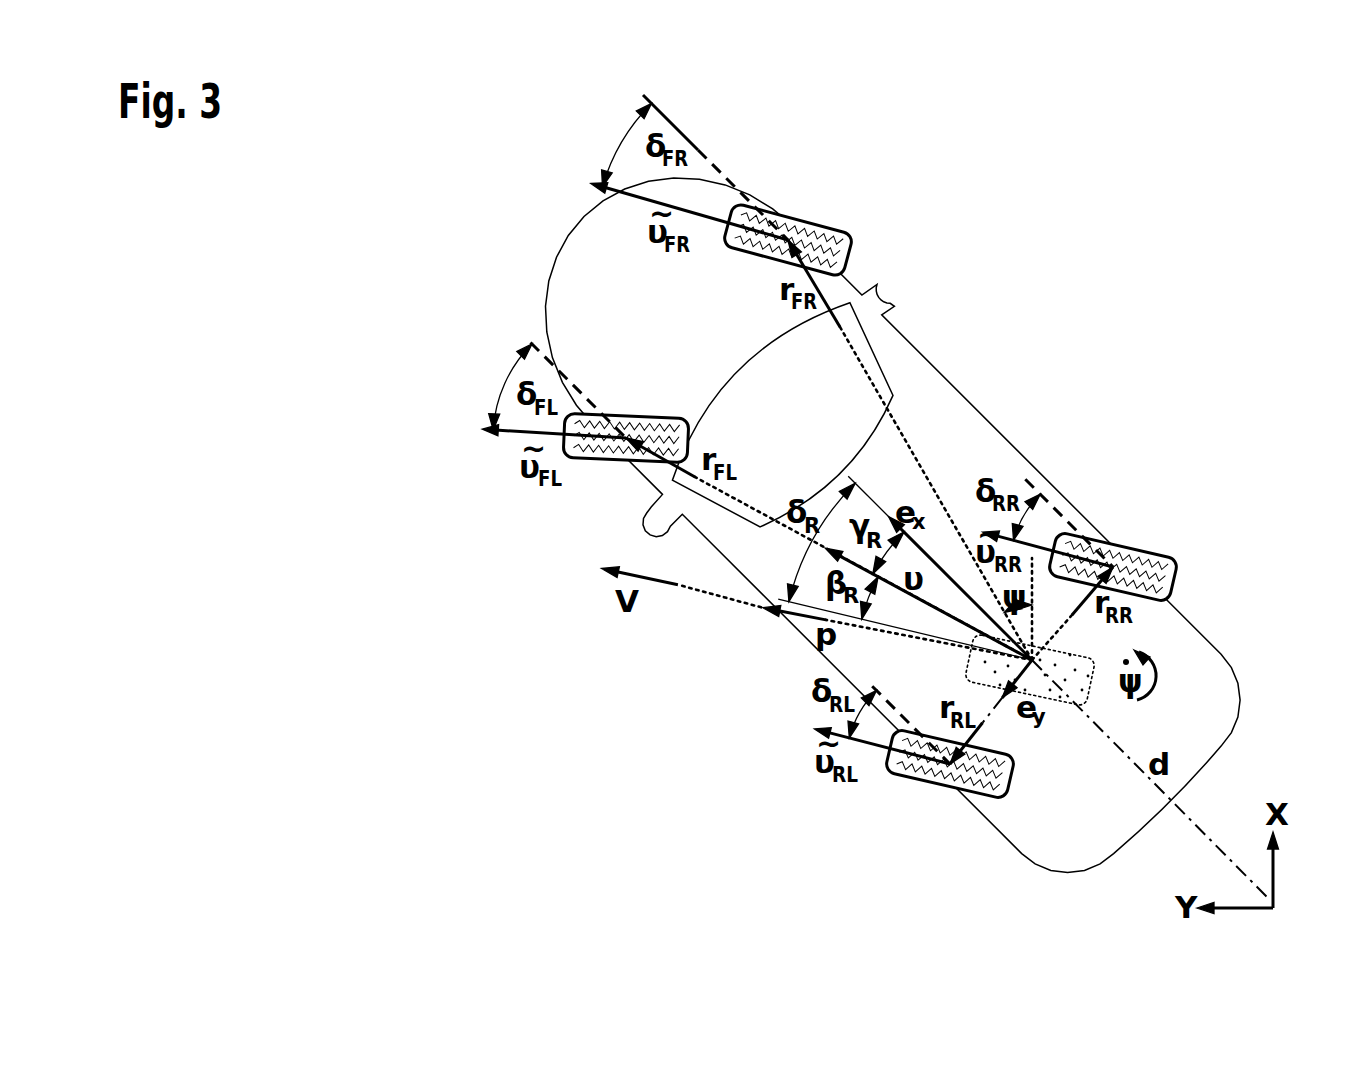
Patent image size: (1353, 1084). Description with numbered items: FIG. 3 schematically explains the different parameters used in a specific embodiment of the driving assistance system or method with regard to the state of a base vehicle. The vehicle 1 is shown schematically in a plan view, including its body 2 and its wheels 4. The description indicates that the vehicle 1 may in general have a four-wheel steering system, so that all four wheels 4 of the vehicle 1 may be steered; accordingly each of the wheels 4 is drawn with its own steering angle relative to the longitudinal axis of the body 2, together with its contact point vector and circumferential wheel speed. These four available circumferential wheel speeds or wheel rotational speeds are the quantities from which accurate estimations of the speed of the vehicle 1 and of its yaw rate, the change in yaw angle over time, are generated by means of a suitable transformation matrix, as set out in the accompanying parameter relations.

The vehicle 1 is at (345, 250).
The body 2 is at (972, 403).
The wheels 4 is at (827, 232).